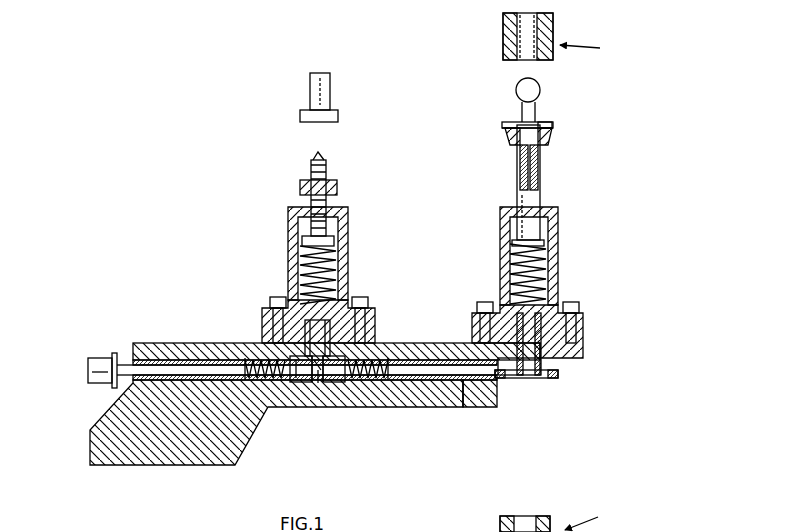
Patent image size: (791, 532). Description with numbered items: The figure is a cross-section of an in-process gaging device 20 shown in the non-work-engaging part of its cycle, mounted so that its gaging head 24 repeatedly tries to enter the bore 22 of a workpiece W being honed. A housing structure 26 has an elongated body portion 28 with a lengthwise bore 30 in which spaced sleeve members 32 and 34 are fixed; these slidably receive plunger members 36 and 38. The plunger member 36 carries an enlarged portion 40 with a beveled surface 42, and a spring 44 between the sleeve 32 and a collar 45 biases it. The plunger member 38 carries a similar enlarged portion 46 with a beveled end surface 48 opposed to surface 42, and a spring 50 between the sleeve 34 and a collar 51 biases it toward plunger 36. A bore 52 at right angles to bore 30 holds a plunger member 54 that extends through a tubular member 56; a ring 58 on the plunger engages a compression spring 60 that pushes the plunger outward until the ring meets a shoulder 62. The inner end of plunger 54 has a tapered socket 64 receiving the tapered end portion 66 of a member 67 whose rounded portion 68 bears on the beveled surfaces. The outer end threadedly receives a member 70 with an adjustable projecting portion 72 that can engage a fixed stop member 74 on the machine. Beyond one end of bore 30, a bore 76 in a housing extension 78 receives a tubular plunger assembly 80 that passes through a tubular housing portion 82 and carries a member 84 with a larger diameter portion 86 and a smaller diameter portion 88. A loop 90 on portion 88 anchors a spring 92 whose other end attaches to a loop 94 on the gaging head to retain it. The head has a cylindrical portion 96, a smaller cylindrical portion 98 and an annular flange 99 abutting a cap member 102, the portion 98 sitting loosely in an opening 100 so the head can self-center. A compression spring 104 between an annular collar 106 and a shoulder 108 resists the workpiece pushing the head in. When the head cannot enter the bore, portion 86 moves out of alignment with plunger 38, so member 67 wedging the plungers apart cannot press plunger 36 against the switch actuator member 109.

The in-process gaging device 20 is at (176, 280).
The bore 22 is at (518, 40).
The gaging head 24 is at (520, 90).
The housing structure 26 is at (147, 340).
The elongated body portion 28 is at (480, 408).
The bore 30 is at (408, 380).
The sleeve member 32 is at (178, 342).
The sleeve member 34 is at (402, 378).
The plunger member 36 is at (146, 383).
The plunger member 38 is at (470, 378).
The enlarged portion 40 is at (308, 383).
The beveled surface 42 is at (292, 375).
The spring 44 is at (248, 386).
The collar 45 is at (300, 380).
The enlarged portion 46 is at (332, 378).
The beveled end surface 48 is at (340, 356).
The spring 50 is at (410, 360).
The collar or ring 51 is at (334, 380).
The bore 52 is at (322, 305).
The plunger member 54 is at (332, 237).
The tubular member 56 is at (292, 215).
The annular ring 58 is at (300, 240).
The compression spring 60 is at (298, 262).
The shoulder 62 is at (345, 262).
The tapered hole or socket 64 is at (300, 352).
The tapered end portion 66 is at (292, 358).
The member 67 is at (318, 383).
The rounded portion 68 is at (314, 383).
The member 70 is at (326, 178).
The endwardly projecting portion 72 is at (317, 162).
The stop member 74 is at (308, 88).
The bore 76 is at (483, 342).
The housing extension 78 is at (584, 326).
The plunger assembly 80 is at (542, 197).
The tubular housing portion 82 is at (500, 222).
The member 84 is at (553, 382).
The larger diameter portion 86 is at (558, 373).
The smaller diameter portion 88 is at (530, 378).
The loop 90 is at (546, 356).
The spring 92 is at (520, 172).
The loop 94 is at (541, 160).
The cylindrical portion 96 is at (538, 104).
The smaller diameter cylindrical portion 98 is at (550, 138).
The annular flange 99 is at (548, 127).
The opening 100 is at (518, 124).
The cap member 102 is at (505, 138).
The compression spring 104 is at (515, 280).
The annular collar 106 is at (548, 254).
The shoulder 108 is at (560, 312).
The switch actuator member 109 is at (100, 360).